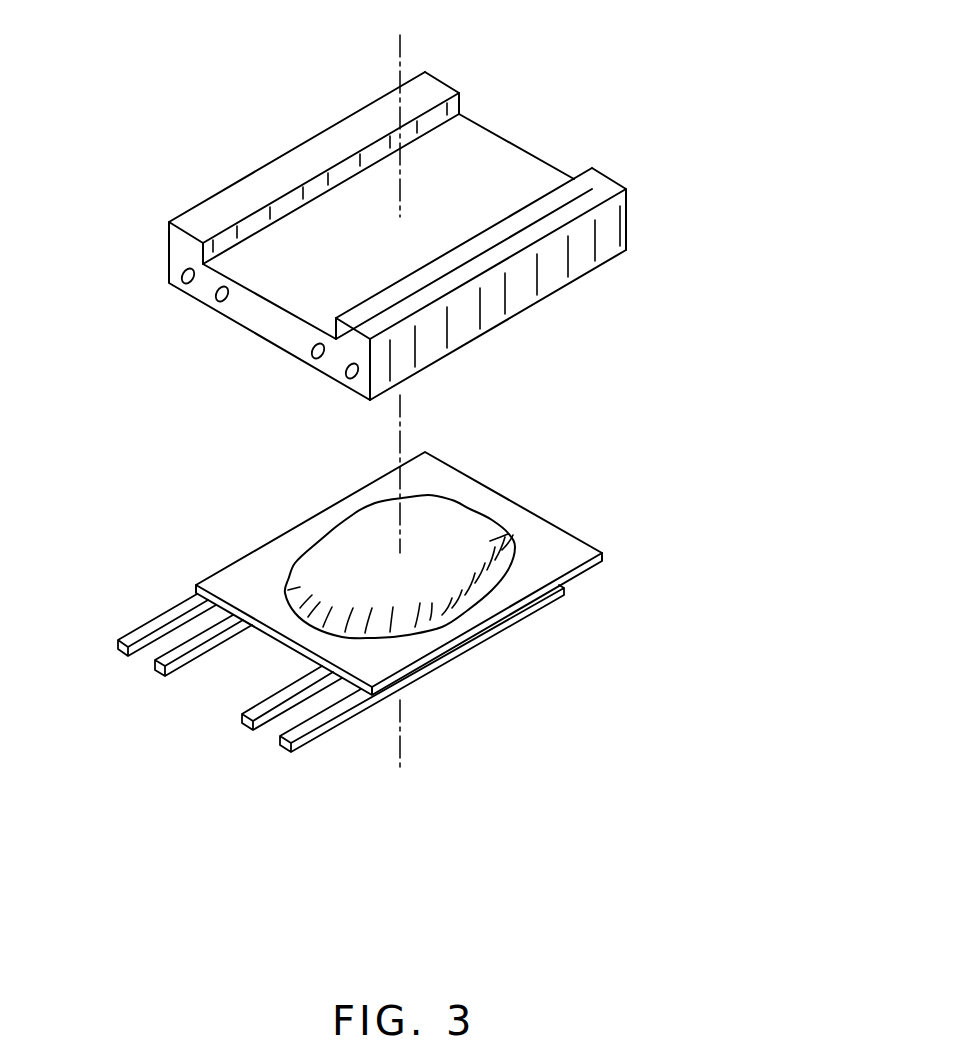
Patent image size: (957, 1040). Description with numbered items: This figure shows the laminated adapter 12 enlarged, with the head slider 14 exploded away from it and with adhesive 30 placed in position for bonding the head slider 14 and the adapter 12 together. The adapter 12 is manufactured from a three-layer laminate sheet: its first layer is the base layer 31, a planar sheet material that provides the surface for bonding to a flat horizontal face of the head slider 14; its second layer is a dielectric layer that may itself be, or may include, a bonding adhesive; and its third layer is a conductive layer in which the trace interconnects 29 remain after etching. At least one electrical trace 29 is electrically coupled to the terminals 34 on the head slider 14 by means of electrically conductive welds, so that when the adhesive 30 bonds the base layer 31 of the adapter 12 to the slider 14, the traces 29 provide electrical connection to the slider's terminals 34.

The laminated adapter 12 is at (643, 447).
The head slider 14 is at (488, 167).
The trace interconnects 29 is at (292, 742).
The adhesive 30 is at (435, 532).
The base layer 31 is at (553, 560).
The terminals 34 is at (218, 300).